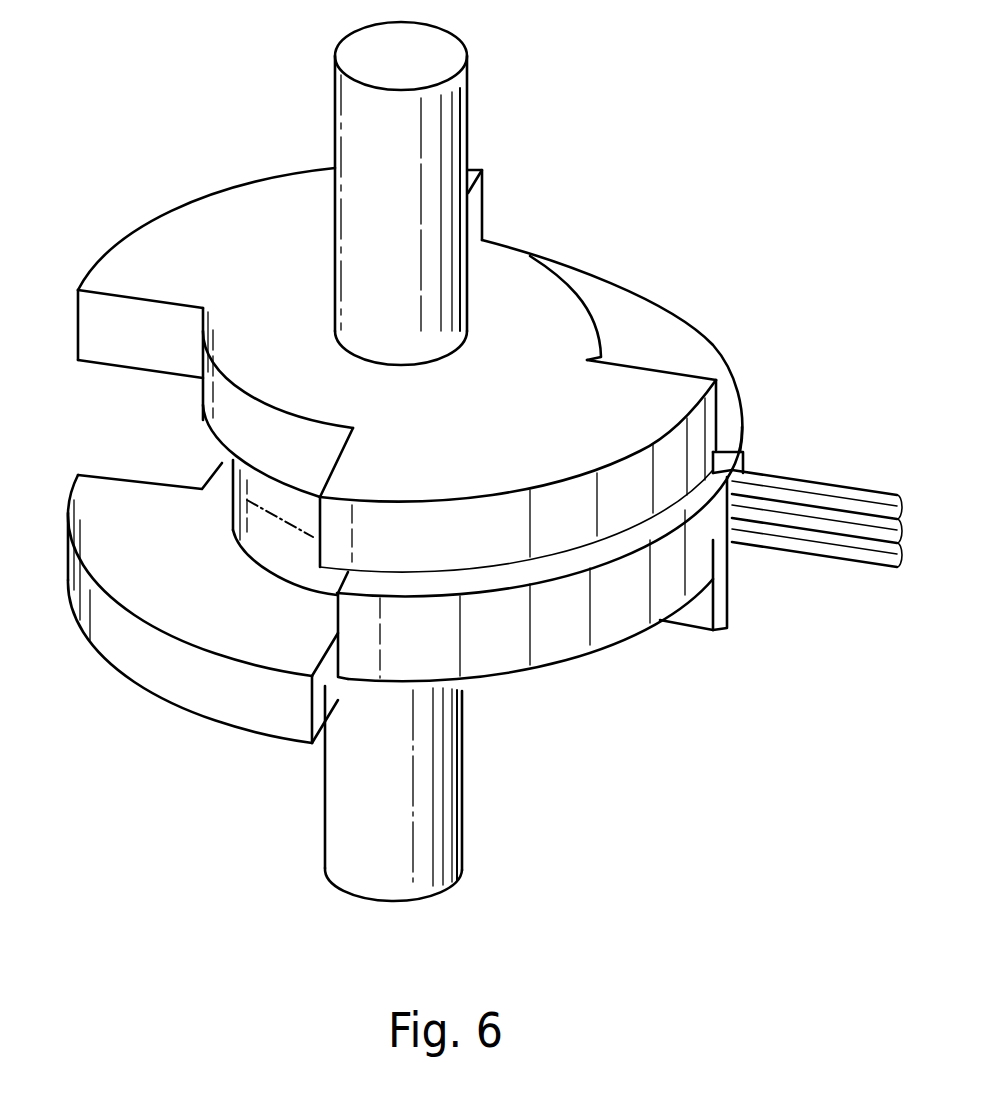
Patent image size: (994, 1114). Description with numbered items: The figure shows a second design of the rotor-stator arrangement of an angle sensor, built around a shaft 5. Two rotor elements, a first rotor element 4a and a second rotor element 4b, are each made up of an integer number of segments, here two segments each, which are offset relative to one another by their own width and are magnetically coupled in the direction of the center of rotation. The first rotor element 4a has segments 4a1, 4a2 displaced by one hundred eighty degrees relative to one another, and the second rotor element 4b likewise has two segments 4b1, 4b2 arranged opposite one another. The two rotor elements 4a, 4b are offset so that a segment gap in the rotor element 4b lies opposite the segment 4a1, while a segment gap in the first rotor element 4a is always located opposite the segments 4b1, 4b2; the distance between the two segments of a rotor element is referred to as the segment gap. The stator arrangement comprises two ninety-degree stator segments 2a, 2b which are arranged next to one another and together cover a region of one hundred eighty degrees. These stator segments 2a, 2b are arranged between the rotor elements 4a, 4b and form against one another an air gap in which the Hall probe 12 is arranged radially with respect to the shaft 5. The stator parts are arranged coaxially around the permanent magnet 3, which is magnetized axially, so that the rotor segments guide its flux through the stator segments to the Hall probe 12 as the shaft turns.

The shaft 5 is at (447, 103).
The stator segment 2a is at (662, 333).
The stator segment 2b is at (600, 625).
The permanent magnet 3 is at (247, 532).
The first rotor element 4a is at (550, 292).
The segment of the first rotor element 4a1 is at (218, 212).
The segment of the first rotor element 4a2 is at (677, 405).
The second rotor element 4b is at (222, 480).
The segment of the second rotor element 4b1 is at (185, 683).
The segment of the second rotor element 4b2 is at (722, 600).
The Hall probe 12 is at (735, 466).